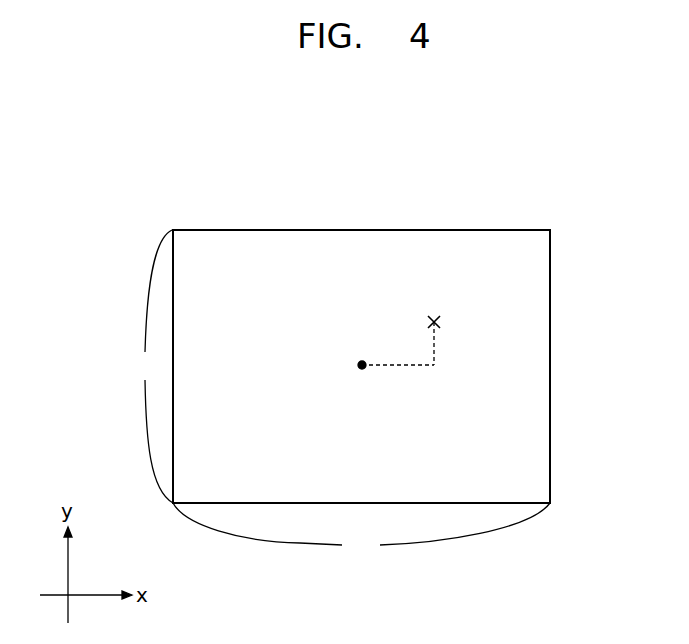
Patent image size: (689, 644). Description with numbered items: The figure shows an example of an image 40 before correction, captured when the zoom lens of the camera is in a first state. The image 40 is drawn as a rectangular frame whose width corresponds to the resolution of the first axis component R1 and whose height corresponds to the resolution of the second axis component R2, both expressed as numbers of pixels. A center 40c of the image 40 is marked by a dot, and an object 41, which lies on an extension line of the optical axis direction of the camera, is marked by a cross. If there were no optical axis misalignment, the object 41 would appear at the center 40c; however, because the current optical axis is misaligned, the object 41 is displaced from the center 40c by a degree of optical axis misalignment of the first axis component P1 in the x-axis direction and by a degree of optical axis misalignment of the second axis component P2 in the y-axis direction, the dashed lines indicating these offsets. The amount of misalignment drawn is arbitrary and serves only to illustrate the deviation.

The image 40 is at (495, 230).
The center of the image 40c is at (362, 360).
The object 41 is at (434, 319).
The degree of optical axis misalignment of the first axis component P1 is at (434, 360).
The degree of optical axis misalignment of the second axis component P2 is at (437, 326).
The resolution of the first axis component R1 is at (361, 530).
The resolution of the second axis component R2 is at (153, 366).